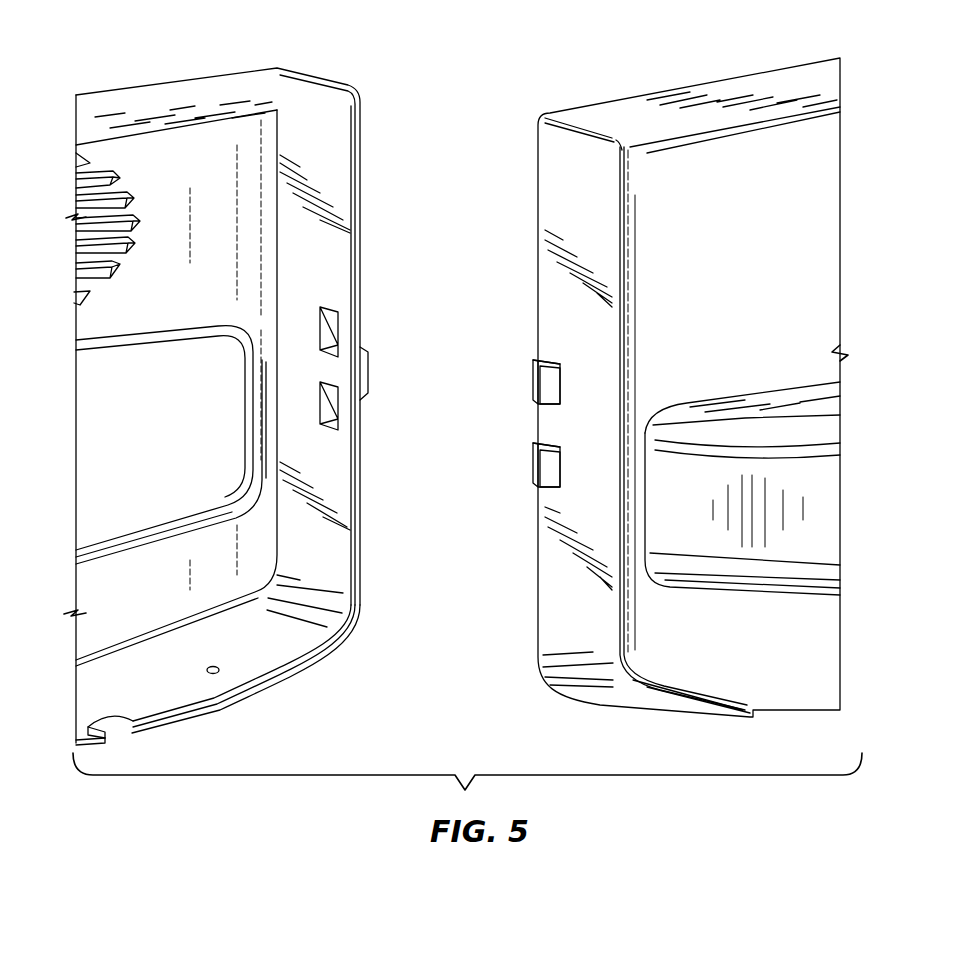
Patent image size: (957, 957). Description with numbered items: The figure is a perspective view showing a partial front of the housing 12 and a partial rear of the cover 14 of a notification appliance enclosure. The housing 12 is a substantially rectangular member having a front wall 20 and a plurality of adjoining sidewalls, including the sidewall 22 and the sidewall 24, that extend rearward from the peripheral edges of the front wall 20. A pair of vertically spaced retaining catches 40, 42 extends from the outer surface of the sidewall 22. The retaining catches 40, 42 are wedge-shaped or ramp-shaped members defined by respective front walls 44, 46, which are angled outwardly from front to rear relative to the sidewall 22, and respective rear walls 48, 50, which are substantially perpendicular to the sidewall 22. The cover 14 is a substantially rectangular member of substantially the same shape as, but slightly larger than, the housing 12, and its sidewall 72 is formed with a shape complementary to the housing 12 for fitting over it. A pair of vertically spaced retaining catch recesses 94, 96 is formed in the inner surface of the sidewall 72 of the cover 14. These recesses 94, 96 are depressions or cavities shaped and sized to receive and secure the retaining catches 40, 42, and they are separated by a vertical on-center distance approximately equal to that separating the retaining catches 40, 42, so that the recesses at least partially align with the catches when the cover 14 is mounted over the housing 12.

The housing 12 is at (778, 67).
The cover 14 is at (153, 113).
The front wall 20 is at (752, 167).
The sidewall 22 is at (587, 240).
The sidewall 24 is at (650, 108).
The retaining catch 40 is at (533, 375).
The retaining catch 42 is at (533, 461).
The front wall 44 is at (550, 382).
The front wall 46 is at (545, 471).
The rear wall 48 is at (538, 362).
The rear wall 50 is at (538, 446).
The sidewall 72 is at (305, 243).
The retaining catch recess 94 is at (328, 331).
The retaining catch recess 96 is at (327, 402).